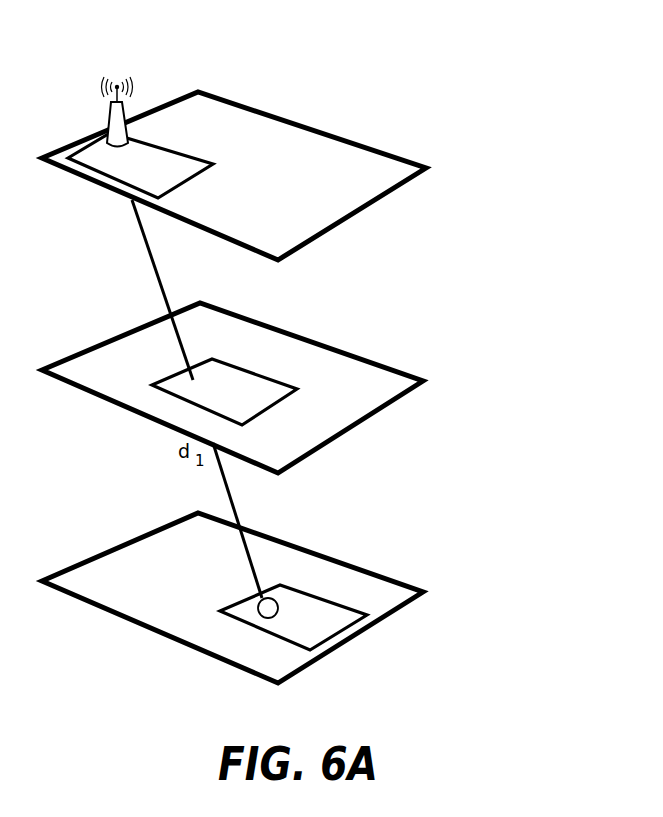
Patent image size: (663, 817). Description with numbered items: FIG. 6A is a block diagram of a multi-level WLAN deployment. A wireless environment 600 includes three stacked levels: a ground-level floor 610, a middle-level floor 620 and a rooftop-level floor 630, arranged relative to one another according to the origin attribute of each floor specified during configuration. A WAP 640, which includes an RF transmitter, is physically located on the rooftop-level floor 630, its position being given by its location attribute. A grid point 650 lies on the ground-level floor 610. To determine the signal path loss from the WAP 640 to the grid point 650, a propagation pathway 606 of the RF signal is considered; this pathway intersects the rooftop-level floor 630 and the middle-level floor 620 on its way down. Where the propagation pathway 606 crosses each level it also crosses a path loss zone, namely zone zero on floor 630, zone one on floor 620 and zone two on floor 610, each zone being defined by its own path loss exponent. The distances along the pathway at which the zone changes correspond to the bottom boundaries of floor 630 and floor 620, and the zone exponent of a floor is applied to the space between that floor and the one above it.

The wireless environment 600 is at (570, 70).
The propagation pathway 606 is at (162, 281).
The ground-level floor 610 is at (423, 592).
The middle-level floor 620 is at (423, 381).
The rooftop-level floor 630 is at (426, 168).
The WAP 640 is at (131, 90).
The grid point 650 is at (266, 618).